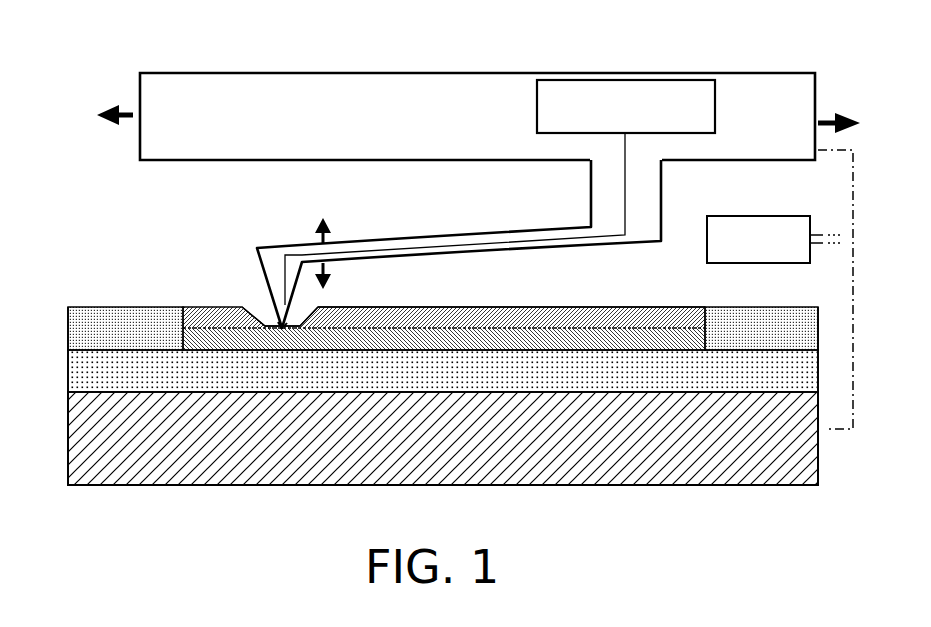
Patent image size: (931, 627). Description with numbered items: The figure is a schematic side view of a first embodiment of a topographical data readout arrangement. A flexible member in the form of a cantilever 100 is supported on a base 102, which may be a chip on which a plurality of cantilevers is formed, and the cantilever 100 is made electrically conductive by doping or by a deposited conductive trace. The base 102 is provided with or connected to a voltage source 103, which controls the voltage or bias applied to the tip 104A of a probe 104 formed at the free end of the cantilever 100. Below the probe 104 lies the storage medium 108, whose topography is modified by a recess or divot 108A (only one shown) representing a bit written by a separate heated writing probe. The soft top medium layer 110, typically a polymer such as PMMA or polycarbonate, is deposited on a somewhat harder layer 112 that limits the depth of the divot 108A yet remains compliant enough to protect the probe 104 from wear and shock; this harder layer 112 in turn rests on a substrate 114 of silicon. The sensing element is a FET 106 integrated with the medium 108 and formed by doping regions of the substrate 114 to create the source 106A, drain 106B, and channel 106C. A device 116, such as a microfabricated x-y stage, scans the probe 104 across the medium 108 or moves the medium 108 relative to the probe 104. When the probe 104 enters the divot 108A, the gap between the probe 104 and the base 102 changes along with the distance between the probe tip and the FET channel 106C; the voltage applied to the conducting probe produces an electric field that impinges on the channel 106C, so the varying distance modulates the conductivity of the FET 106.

The cantilever 100 is at (500, 235).
The base 102 is at (280, 92).
The voltage source 103 is at (575, 88).
The probe 104 is at (278, 305).
The tip 104A is at (290, 324).
The FET 106 is at (106, 270).
The source 106A is at (170, 310).
The drain 106B is at (780, 316).
The channel 106C is at (188, 373).
The storage medium 108 is at (208, 284).
The divot 108A is at (262, 312).
The top medium layer 110 is at (482, 310).
The harder layer 112 is at (540, 330).
The substrate 114 is at (141, 467).
The device 116 is at (725, 243).